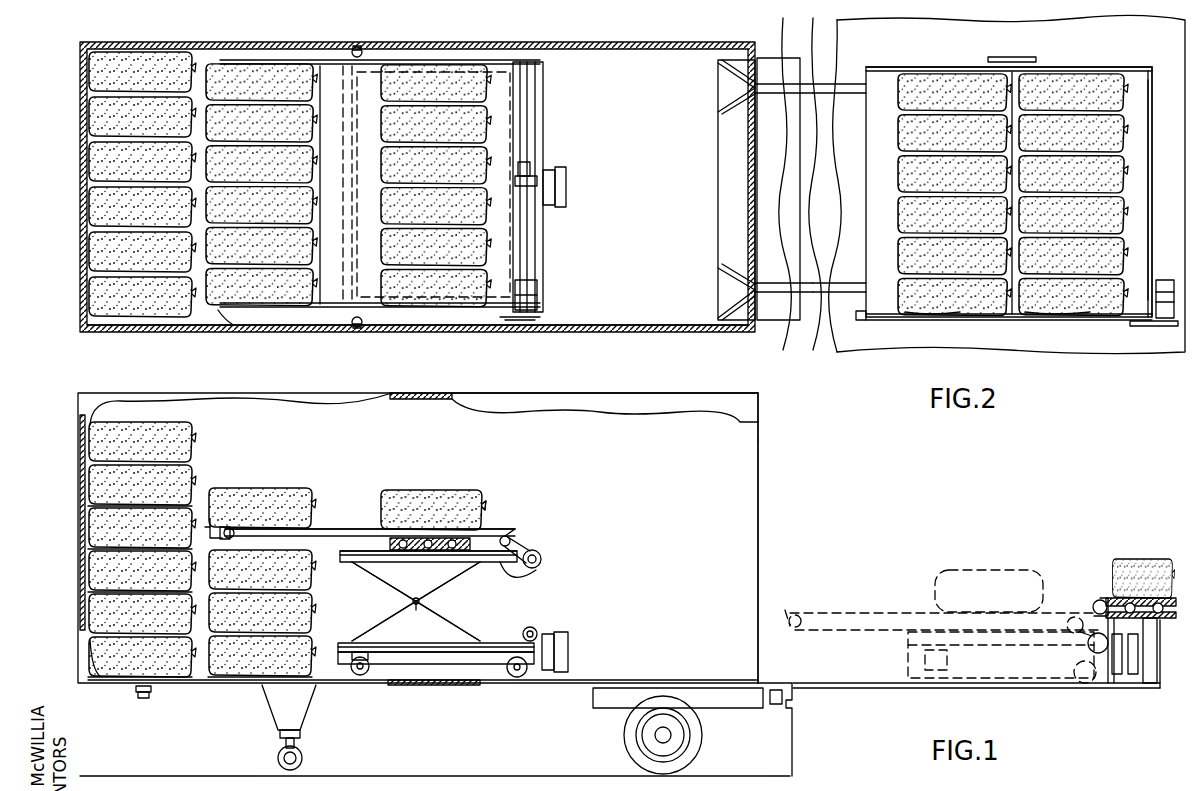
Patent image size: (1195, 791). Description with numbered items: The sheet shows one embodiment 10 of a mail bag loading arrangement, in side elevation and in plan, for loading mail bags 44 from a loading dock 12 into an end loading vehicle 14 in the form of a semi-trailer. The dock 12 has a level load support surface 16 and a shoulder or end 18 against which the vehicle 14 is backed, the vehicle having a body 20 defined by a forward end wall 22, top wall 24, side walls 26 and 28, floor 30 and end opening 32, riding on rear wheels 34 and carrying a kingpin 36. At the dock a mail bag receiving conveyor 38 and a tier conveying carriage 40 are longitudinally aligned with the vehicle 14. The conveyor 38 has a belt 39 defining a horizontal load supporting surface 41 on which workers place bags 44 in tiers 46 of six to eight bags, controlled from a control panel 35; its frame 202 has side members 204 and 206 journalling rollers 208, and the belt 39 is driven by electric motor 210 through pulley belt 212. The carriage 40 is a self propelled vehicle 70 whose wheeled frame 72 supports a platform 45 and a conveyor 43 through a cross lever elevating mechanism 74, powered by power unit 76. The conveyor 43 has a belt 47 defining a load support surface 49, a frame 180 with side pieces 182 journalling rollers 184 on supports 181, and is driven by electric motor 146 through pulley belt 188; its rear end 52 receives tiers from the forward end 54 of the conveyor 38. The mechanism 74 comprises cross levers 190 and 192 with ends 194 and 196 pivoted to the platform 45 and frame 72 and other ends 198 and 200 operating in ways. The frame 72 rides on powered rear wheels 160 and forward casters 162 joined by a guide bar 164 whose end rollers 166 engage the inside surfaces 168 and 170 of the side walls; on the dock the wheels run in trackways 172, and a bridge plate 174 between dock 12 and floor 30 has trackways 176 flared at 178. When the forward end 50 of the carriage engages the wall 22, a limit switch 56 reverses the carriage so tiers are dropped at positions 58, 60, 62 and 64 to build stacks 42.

In FIG. 1, the embodiment of the invention 10 is at (84, 390).
In FIG. 1, the loading dock 12 is at (1040, 696).
In FIG. 1, the end loading vehicle 14 is at (738, 400).
In FIG. 1, the load support surface 16 is at (890, 688).
In FIG. 1, the shoulder or end 18 is at (774, 704).
In FIG. 1, the body 20 is at (680, 392).
In FIG. 1, the forward end wall 22 is at (78, 468).
In FIG. 1, the top wall 24 is at (445, 392).
In FIG. 1, the side wall 26 is at (324, 396).
In FIG. 1, the side wall 28 is at (585, 410).
In FIG. 1, the floor 30 is at (432, 686).
In FIG. 1, the end opening 32 is at (760, 457).
In FIG. 1, the rear wheels 34 is at (620, 740).
In FIG. 2, the control panel 35 is at (1020, 58).
In FIG. 2, the kingpin 36 is at (780, 36).
In FIG. 1, the kingpin 36 is at (152, 699).
In FIG. 2, the mail bag receiving conveyor 38 is at (1080, 67).
In FIG. 2, the conveyor belt 39 is at (1140, 90).
In FIG. 1, the conveyor belt 39 is at (1152, 590).
In FIG. 1, the carriage 40 is at (548, 534).
In FIG. 2, the load supporting surface 41 is at (1013, 312).
In FIG. 1, the mail bag stacks 42 is at (128, 672).
In FIG. 1, the carriage conveyor 43 is at (500, 528).
In FIG. 2, the mail bags 44 is at (147, 100).
In FIG. 1, the mail bags 44 is at (180, 460).
In FIG. 1, the platform 45 is at (372, 550).
In FIG. 2, the tier 46 is at (920, 312).
In FIG. 1, the tier 46 is at (108, 432).
In FIG. 2, the conveyor belt 47 is at (498, 128).
In FIG. 1, the conveyor belt 47 is at (472, 505).
In FIG. 2, the load support surface 49 is at (325, 300).
In FIG. 1, the forward end 50 is at (790, 612).
In FIG. 1, the rear end 52 is at (1075, 616).
In FIG. 1, the forward end 54 is at (1092, 600).
In FIG. 2, the limit switch arrangement 56 is at (225, 318).
In FIG. 1, the limit switch arrangement 56 is at (790, 626).
In FIG. 1, the first tier position 58 is at (112, 656).
In FIG. 1, the second tier position 60 is at (110, 600).
In FIG. 1, the third tier position 62 is at (105, 562).
In FIG. 1, the fourth tier position 64 is at (105, 521).
In FIG. 1, the self propelled vehicle 70 is at (566, 596).
In FIG. 1, the wheeled frame 72 is at (528, 628).
In FIG. 1, the elevating mechanism 74 is at (456, 606).
In FIG. 1, the power unit 76 is at (570, 648).
In FIG. 2, the electric motor 146 is at (535, 298).
In FIG. 1, the electric motor 146 is at (541, 562).
In FIG. 1, the rear wheels 160 is at (517, 678).
In FIG. 1, the forward casters 162 is at (362, 676).
In FIG. 2, the guide bar 164 is at (348, 70).
In FIG. 2, the end rollers 166 is at (365, 50).
In FIG. 2, the inside surface 168 is at (578, 324).
In FIG. 2, the inside surface 170 is at (578, 46).
In FIG. 2, the trackways 172 is at (850, 84).
In FIG. 1, the trackways 172 is at (855, 688).
In FIG. 2, the bridge plate 174 is at (736, 188).
In FIG. 1, the bridge plate 174 is at (792, 708).
In FIG. 2, the trackways 176 is at (782, 95).
In FIG. 2, the flared portions 178 is at (728, 90).
In FIG. 1, the frame 180 is at (325, 530).
In FIG. 1, the supports 181 is at (356, 555).
In FIG. 1, the side pieces 182 is at (285, 528).
In FIG. 1, the rollers 184 is at (416, 538).
In FIG. 1, the pulley belt 188 is at (524, 548).
In FIG. 1, the cross lever 190 is at (400, 600).
In FIG. 1, the cross lever 192 is at (388, 620).
In FIG. 1, the lever end 194 is at (372, 573).
In FIG. 1, the lever end 196 is at (372, 634).
In FIG. 1, the lever end 198 is at (440, 584).
In FIG. 1, the lever end 200 is at (452, 636).
In FIG. 2, the frame 202 is at (1122, 67).
In FIG. 2, the side member 204 is at (920, 67).
In FIG. 2, the side member 206 is at (957, 316).
In FIG. 1, the side member 206 is at (1106, 680).
In FIG. 1, the rollers 208 is at (1128, 588).
In FIG. 2, the electric motor 210 is at (1166, 312).
In FIG. 2, the pulley belt 212 is at (1145, 326).